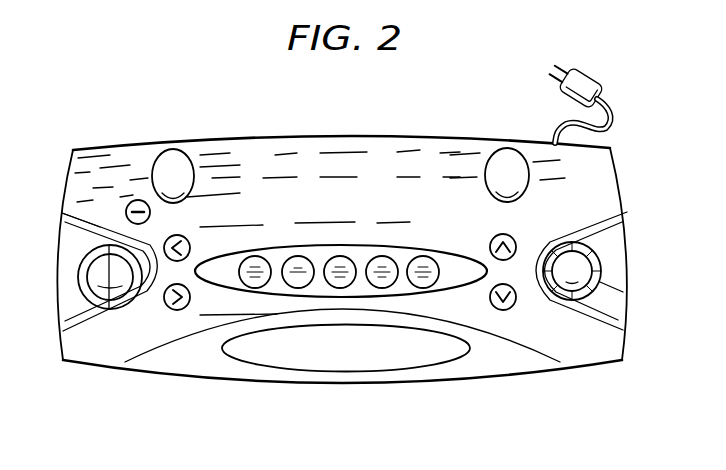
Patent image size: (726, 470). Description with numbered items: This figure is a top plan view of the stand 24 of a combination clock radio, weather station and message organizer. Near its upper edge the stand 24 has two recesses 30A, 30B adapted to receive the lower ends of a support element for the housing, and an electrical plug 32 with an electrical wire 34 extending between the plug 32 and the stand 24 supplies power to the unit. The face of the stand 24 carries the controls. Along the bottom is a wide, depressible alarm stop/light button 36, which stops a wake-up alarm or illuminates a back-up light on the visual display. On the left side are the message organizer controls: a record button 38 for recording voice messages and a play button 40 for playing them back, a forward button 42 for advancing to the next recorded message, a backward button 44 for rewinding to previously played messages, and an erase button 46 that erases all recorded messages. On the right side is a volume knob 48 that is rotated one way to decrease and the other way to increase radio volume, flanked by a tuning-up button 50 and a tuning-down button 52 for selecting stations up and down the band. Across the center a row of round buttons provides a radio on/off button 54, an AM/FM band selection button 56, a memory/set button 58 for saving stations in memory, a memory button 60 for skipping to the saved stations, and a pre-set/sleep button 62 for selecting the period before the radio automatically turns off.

The stand 24 is at (128, 143).
The recess 30A is at (172, 158).
The recess 30B is at (507, 155).
The electrical plug 32 is at (585, 77).
The electrical wire 34 is at (615, 121).
The alarm stop/light button 36 is at (342, 366).
The record button 38 is at (86, 274).
The play button 40 is at (110, 281).
The forward button 42 is at (165, 304).
The backward button 44 is at (63, 228).
The erase button 46 is at (126, 211).
The volume knob 48 is at (597, 261).
The tuning-up button 50 is at (518, 240).
The tuning-down button 52 is at (516, 303).
The radio on/off button 54 is at (423, 256).
The AM/FM band selection button 56 is at (379, 256).
The memory/set button 58 is at (337, 256).
The memory button 60 is at (294, 256).
The pre-set/sleep button 62 is at (251, 256).